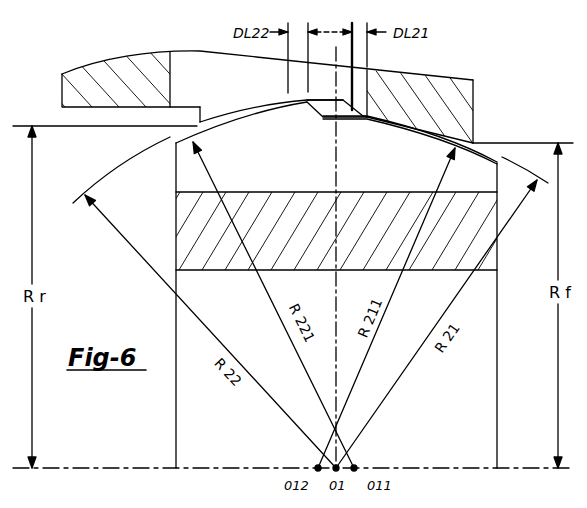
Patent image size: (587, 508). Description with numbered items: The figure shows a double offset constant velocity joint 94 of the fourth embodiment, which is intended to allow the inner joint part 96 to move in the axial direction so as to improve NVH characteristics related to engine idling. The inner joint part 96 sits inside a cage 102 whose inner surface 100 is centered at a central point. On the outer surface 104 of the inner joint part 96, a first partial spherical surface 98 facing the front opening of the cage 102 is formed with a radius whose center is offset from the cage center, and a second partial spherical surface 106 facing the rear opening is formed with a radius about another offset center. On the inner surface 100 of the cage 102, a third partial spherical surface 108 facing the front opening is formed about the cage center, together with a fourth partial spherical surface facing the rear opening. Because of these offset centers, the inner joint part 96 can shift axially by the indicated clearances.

The double offset constant velocity joint 94 is at (114, 150).
The inner joint part 96 is at (492, 255).
The first partial spherical surface 98 is at (438, 135).
The inner surface of the cage 100 is at (245, 108).
The cage 102 is at (117, 66).
The outer surface of the inner joint part 104 is at (327, 119).
The second partial spherical surface 106 is at (212, 128).
The third partial spherical surface 108 is at (453, 133).